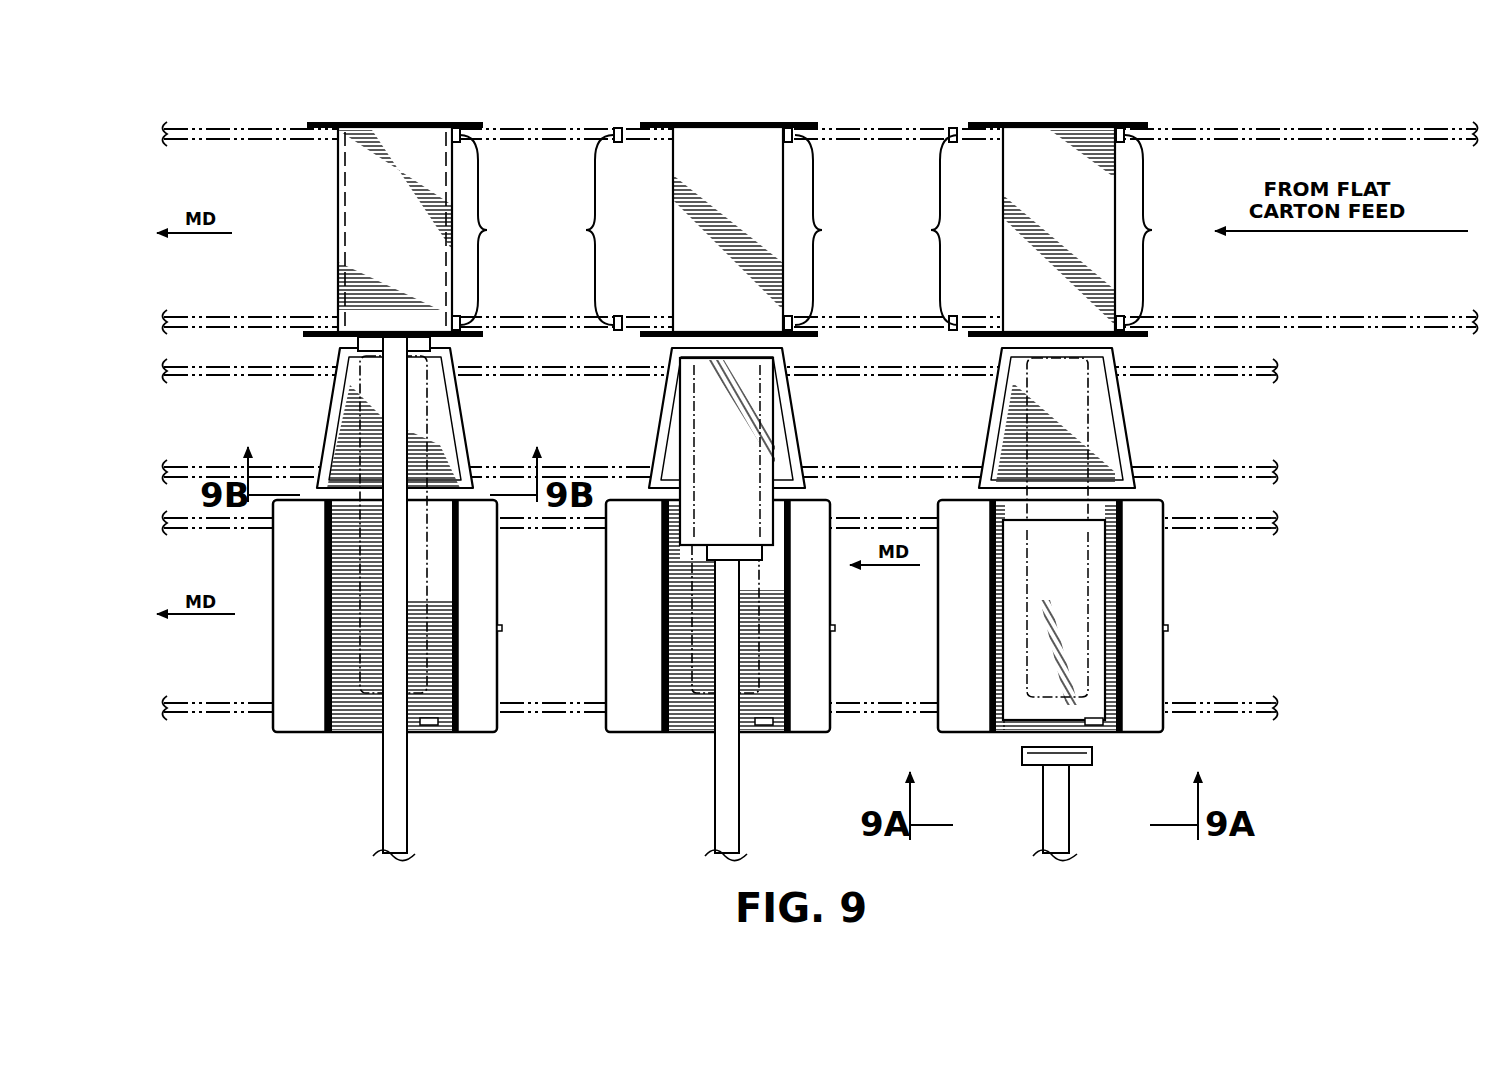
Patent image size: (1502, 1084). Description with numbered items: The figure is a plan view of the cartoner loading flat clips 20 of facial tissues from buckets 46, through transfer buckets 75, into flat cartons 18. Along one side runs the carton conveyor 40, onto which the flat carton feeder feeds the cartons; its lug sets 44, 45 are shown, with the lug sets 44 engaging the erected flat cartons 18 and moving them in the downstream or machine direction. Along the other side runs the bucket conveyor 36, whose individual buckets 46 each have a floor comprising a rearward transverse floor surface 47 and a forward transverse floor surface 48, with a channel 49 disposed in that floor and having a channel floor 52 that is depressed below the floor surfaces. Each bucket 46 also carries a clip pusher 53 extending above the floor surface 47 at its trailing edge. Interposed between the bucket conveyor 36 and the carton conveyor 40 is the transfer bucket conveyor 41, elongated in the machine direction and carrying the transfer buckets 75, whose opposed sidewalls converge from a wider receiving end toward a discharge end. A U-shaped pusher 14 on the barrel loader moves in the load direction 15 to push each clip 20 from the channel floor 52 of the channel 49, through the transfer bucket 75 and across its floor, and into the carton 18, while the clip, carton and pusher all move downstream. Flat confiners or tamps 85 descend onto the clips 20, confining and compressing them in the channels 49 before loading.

The U-shaped pusher 14 is at (432, 343).
The load direction 15 is at (430, 796).
The flat carton 18 is at (336, 250).
The flat clip 20 is at (346, 212).
The bucket conveyor 36 is at (247, 530).
The carton conveyor 40 is at (243, 141).
The transfer bucket conveyor 41 is at (267, 372).
The lug set 44 is at (822, 230).
The lug set 45 is at (753, 230).
The bucket 46 is at (295, 742).
The rearward transverse floor surface 47 is at (482, 695).
The forward transverse floor surface 48 is at (309, 556).
The channel 49 is at (448, 520).
The channel floor 52 is at (428, 724).
The clip pusher 53 is at (502, 628).
The transfer bucket 75 is at (473, 437).
The confiner or tamp 85 is at (428, 608).